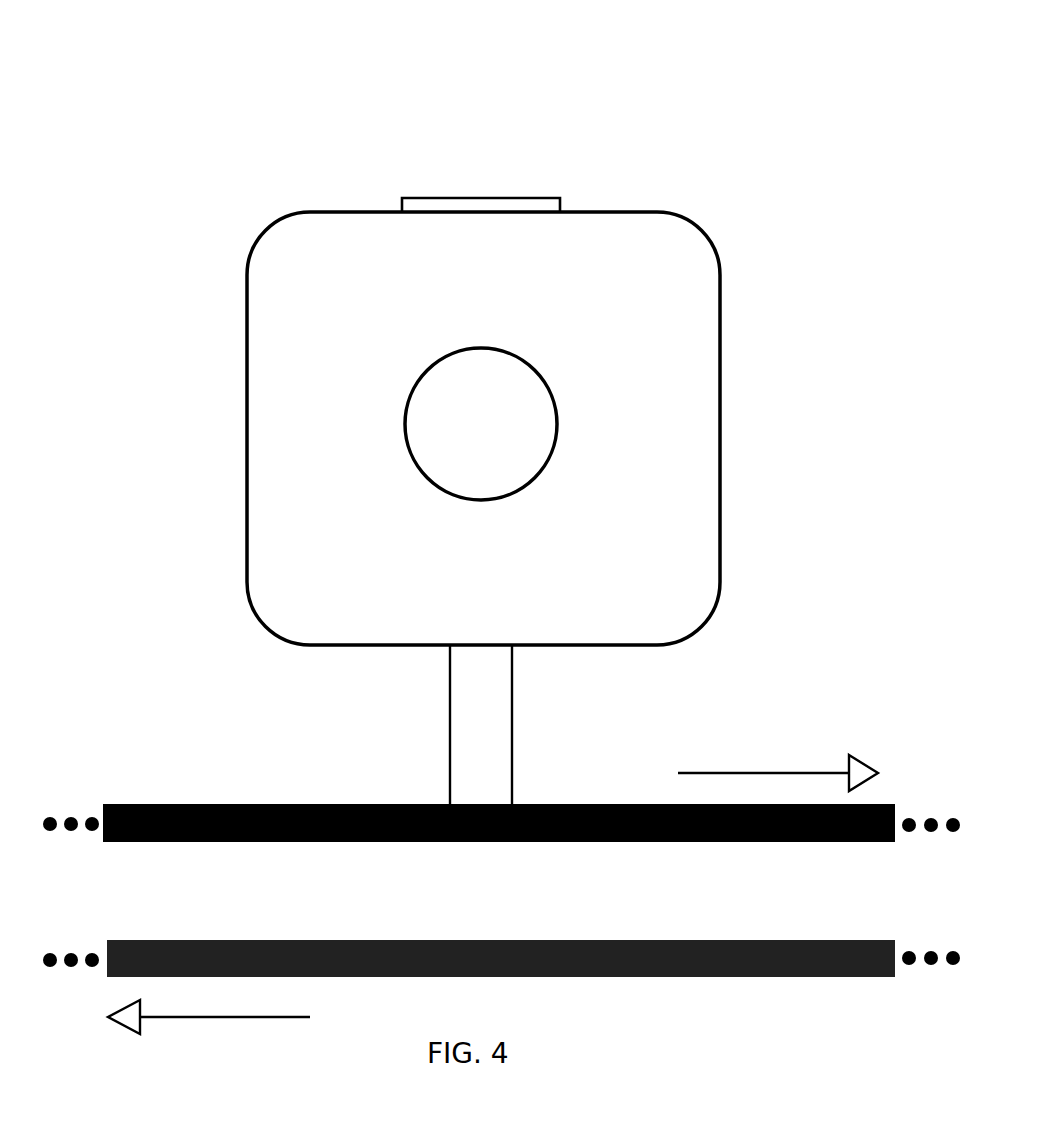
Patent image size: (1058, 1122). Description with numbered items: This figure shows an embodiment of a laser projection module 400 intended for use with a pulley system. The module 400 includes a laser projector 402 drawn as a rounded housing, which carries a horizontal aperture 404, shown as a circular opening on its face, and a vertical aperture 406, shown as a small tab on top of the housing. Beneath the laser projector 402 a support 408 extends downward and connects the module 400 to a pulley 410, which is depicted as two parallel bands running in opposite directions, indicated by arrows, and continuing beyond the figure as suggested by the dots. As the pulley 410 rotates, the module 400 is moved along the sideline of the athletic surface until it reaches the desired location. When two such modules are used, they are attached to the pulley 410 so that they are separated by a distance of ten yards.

The laser projection module 400 is at (722, 163).
The laser projector 402 is at (702, 353).
The horizontal aperture 404 is at (432, 425).
The vertical aperture 406 is at (445, 198).
The support 408 is at (463, 728).
The pulley 410 is at (313, 820).